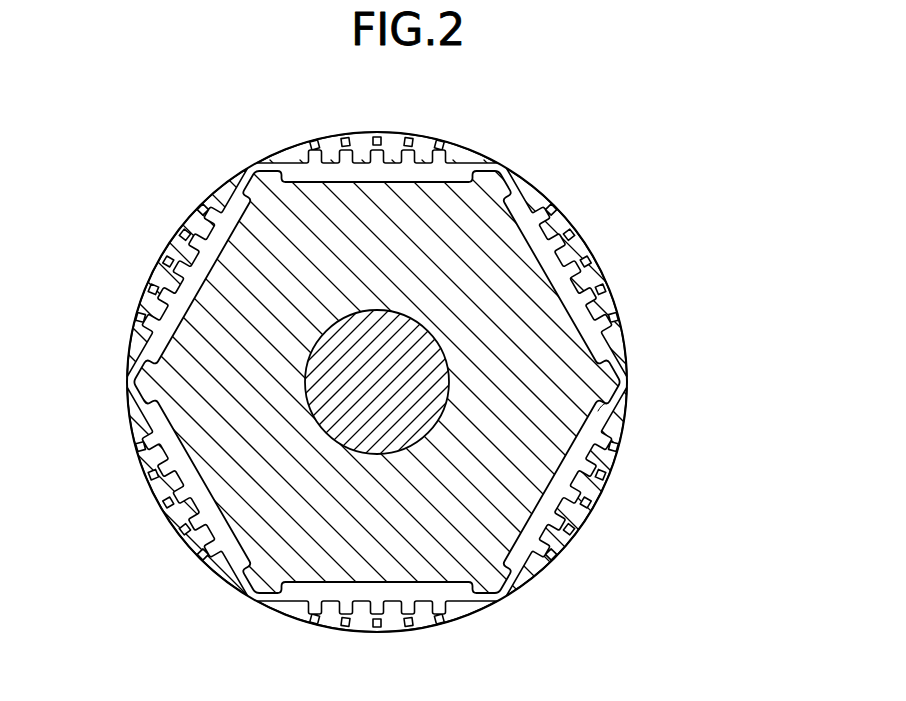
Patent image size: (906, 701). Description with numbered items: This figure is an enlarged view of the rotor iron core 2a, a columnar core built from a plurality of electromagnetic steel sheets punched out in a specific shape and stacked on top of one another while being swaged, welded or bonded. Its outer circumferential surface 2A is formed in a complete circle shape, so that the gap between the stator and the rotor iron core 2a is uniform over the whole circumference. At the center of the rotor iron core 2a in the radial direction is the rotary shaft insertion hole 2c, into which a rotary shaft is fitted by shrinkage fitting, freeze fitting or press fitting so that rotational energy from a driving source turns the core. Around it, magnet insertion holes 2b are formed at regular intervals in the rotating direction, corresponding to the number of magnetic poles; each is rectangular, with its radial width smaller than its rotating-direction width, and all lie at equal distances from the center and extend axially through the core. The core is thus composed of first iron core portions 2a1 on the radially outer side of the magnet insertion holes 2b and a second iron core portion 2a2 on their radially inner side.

The outer circumferential surface 2A is at (383, 133).
The rotor iron core 2a is at (453, 381).
The first iron core portions 2a1 is at (582, 246).
The second iron core portion 2a2 is at (510, 292).
The magnet insertion holes 2b is at (598, 411).
The rotary shaft insertion hole 2c is at (443, 430).